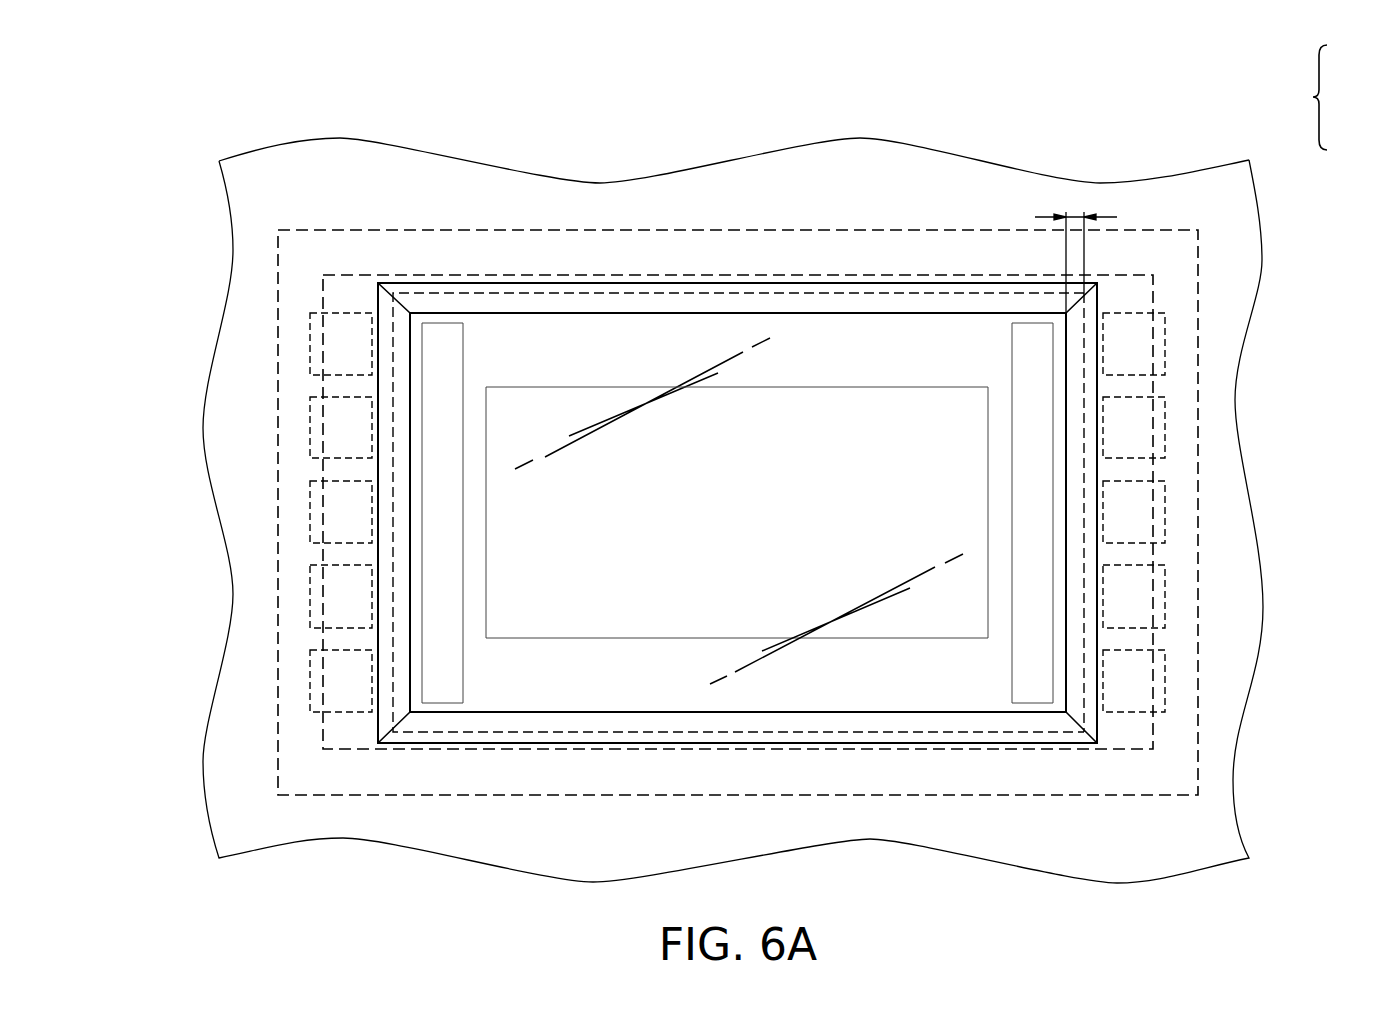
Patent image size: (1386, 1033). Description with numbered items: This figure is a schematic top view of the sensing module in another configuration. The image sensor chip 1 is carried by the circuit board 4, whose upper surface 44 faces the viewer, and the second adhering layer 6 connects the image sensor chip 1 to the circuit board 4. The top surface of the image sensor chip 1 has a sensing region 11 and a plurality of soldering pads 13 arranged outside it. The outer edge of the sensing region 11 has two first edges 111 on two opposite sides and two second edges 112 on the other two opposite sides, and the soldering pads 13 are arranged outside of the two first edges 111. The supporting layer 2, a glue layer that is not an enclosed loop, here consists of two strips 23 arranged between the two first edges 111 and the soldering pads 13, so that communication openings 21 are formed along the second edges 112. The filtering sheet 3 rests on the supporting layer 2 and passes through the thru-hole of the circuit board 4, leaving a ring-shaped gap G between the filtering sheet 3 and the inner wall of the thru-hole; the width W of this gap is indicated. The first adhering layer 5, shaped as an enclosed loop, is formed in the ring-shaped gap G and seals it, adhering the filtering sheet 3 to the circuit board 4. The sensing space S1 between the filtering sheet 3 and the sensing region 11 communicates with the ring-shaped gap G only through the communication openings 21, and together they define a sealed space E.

The image sensor chip 1 is at (355, 726).
The supporting layer 2 is at (1043, 433).
The filtering sheet 3 is at (949, 316).
The circuit board 4 is at (1253, 267).
The first adhering layer 5 is at (802, 285).
The second adhering layer 6 is at (280, 299).
The sensing region 11 is at (640, 601).
The soldering pads 13 is at (317, 344).
The communication opening 21 is at (478, 332).
The strips 23 is at (437, 516).
The upper surface 44 is at (1227, 219).
The first edges 111 is at (485, 412).
The second edges 112 is at (529, 387).
The sealed space E is at (1327, 99).
The ring-shaped gap G is at (1074, 513).
The sensing space S1 is at (1002, 584).
The width W is at (1076, 251).